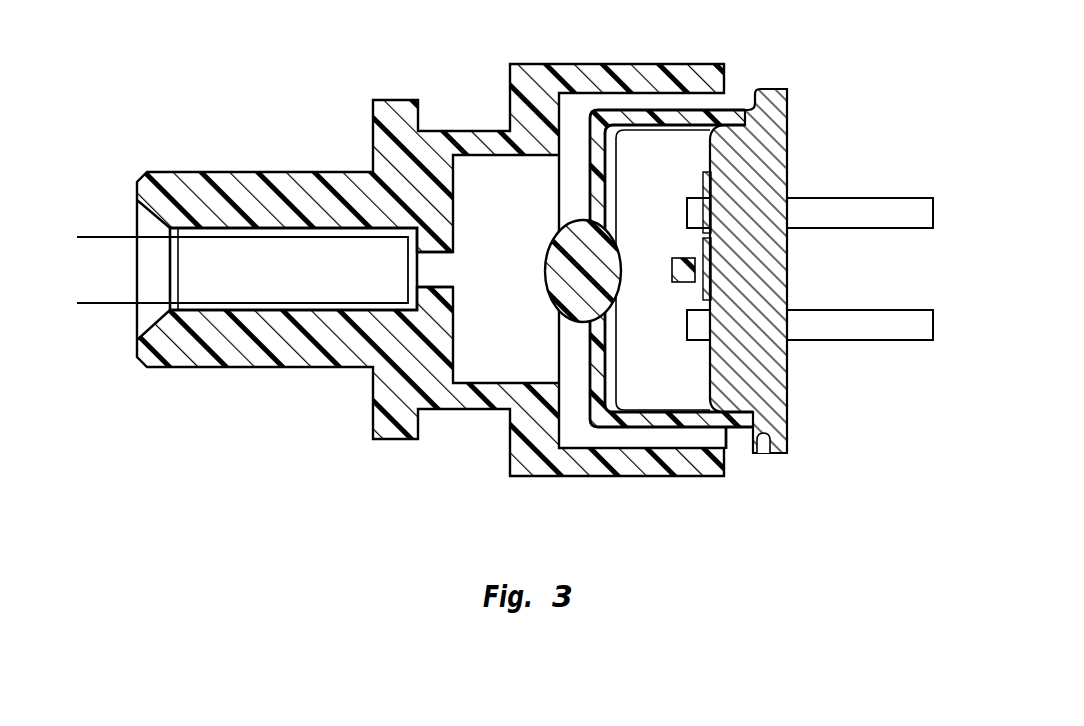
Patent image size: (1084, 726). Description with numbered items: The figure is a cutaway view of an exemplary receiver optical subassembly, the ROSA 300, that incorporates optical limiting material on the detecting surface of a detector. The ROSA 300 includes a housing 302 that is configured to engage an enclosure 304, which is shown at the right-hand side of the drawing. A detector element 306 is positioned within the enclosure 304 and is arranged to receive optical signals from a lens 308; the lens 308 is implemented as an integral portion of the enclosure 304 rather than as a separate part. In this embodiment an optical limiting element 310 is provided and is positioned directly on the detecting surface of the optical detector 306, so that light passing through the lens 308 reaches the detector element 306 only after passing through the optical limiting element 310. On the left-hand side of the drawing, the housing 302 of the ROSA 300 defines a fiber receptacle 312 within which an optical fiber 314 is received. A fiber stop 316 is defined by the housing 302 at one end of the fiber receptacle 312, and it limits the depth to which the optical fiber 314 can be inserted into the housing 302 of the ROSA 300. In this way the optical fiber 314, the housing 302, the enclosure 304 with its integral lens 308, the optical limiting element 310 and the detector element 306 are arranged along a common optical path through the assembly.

The ROSA 300 is at (242, 60).
The housing 302 is at (397, 100).
The enclosure 304 is at (740, 100).
The detector element 306 is at (698, 312).
The lens 308 is at (577, 217).
The optical limiting element 310 is at (672, 270).
The fiber receptacle 312 is at (273, 310).
The optical fiber 314 is at (217, 303).
The fiber stop 316 is at (447, 290).